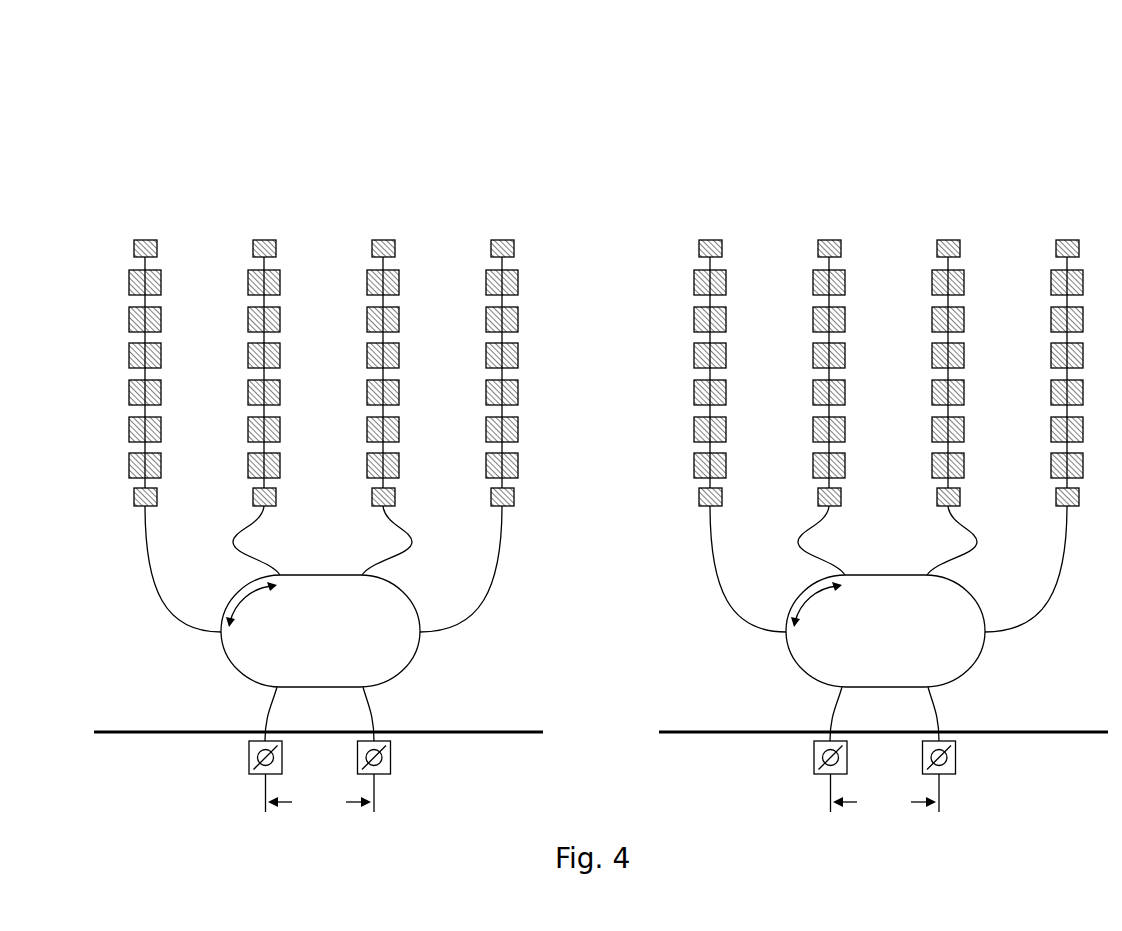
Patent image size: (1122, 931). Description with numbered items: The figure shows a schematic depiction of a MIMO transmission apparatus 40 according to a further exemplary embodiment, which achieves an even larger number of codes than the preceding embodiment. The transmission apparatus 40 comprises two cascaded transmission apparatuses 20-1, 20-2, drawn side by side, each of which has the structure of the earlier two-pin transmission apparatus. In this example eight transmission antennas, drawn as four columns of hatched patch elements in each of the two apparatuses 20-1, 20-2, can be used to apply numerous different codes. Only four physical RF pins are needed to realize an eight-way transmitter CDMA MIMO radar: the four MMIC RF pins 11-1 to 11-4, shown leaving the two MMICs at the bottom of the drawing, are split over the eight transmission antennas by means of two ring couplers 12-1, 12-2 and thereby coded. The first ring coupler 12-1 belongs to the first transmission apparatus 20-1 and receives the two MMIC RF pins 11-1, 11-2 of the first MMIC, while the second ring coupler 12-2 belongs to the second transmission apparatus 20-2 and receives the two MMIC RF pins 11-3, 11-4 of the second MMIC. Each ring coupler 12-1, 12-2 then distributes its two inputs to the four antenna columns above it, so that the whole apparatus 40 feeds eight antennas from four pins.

The transmission apparatus 40 is at (629, 83).
The transmission apparatus 20-1 is at (306, 183).
The transmission apparatus 20-2 is at (883, 463).
The ring coupler 12-1 is at (347, 644).
The ring coupler 12-2 is at (885, 631).
The MMIC RF pin 11-1 is at (272, 690).
The MMIC RF pin 11-2 is at (368, 691).
The MMIC RF pin 11-3 is at (786, 708).
The MMIC RF pin 11-4 is at (983, 706).